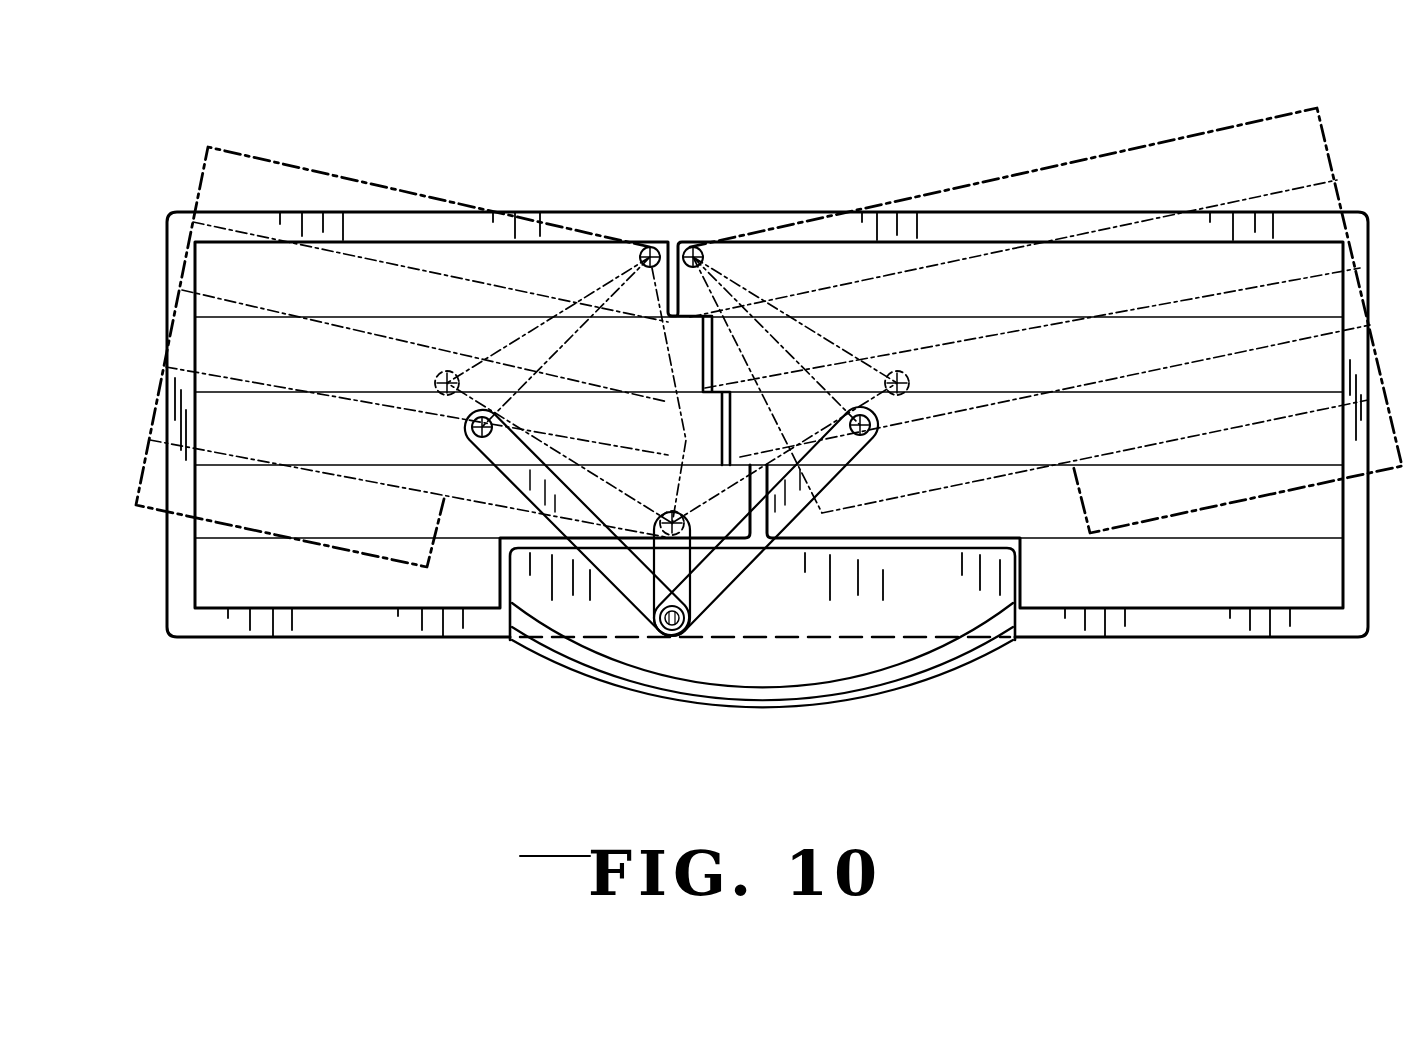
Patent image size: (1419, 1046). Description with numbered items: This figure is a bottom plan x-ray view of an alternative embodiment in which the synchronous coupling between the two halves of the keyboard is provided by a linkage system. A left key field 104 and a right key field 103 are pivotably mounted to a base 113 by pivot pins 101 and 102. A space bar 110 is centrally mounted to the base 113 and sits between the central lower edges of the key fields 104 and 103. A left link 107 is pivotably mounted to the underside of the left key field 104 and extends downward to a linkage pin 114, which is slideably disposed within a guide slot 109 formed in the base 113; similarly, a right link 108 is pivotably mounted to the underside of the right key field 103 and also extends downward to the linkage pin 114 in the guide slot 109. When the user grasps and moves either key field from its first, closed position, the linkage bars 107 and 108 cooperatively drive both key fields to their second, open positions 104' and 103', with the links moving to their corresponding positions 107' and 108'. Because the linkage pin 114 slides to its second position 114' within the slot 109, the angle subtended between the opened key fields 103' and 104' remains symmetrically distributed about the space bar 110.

The pivot pin 101 is at (656, 247).
The pivot pin 102 is at (681, 247).
The right key field 103 is at (1030, 306).
The right key field in second, open position 103' is at (1046, 292).
The left key field 104 is at (418, 323).
The left key field in second, open position 104' is at (393, 314).
The left link 107 is at (406, 581).
The left link in second position 107' is at (358, 545).
The right link 108 is at (943, 588).
The right link in second position 108' is at (1027, 543).
The guide slot 109 is at (673, 572).
The space bar 110 is at (590, 618).
The base 113 is at (188, 625).
The linkage pin 114 is at (659, 695).
The linkage pin in second position 114' is at (619, 631).